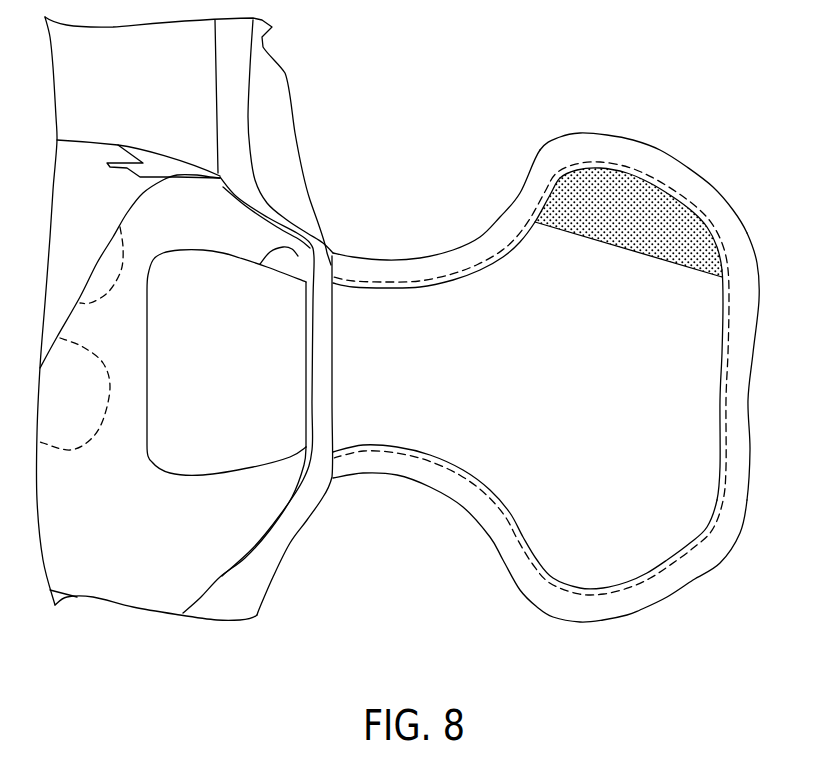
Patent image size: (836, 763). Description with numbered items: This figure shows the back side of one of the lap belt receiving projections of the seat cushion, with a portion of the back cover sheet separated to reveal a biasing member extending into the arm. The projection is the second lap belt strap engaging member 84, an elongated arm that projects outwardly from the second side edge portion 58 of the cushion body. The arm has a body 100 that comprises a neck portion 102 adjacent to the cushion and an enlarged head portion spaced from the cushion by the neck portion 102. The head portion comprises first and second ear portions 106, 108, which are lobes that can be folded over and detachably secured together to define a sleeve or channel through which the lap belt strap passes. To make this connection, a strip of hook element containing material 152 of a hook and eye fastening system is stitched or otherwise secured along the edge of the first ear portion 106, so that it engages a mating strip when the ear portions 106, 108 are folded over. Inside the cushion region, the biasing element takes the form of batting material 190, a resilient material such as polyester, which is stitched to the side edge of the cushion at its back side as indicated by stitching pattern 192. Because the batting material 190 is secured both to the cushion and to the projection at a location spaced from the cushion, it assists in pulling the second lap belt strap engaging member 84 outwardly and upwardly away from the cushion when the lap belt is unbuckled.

The second side edge portion 58 is at (293, 540).
The batting material 190 is at (187, 270).
The stitching pattern 192 is at (307, 383).
The neck portion 102 is at (378, 307).
The first ear portion 106 is at (633, 152).
The second lap belt strap engaging member 84 is at (728, 204).
The body 100 is at (700, 345).
The second ear portion 108 is at (625, 601).
The strip of hook element containing material 152 is at (656, 211).